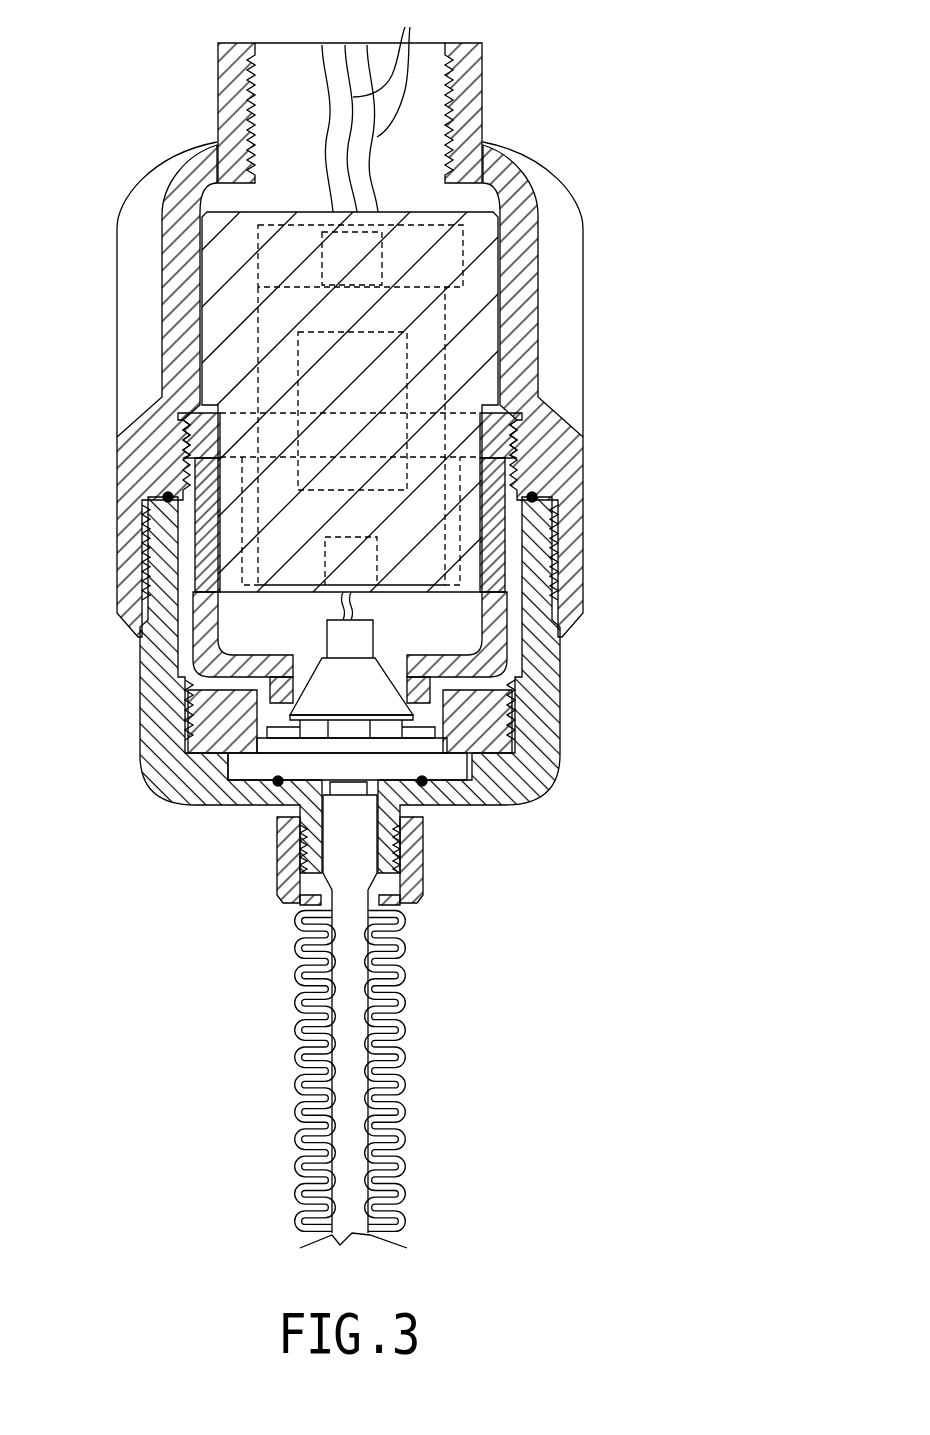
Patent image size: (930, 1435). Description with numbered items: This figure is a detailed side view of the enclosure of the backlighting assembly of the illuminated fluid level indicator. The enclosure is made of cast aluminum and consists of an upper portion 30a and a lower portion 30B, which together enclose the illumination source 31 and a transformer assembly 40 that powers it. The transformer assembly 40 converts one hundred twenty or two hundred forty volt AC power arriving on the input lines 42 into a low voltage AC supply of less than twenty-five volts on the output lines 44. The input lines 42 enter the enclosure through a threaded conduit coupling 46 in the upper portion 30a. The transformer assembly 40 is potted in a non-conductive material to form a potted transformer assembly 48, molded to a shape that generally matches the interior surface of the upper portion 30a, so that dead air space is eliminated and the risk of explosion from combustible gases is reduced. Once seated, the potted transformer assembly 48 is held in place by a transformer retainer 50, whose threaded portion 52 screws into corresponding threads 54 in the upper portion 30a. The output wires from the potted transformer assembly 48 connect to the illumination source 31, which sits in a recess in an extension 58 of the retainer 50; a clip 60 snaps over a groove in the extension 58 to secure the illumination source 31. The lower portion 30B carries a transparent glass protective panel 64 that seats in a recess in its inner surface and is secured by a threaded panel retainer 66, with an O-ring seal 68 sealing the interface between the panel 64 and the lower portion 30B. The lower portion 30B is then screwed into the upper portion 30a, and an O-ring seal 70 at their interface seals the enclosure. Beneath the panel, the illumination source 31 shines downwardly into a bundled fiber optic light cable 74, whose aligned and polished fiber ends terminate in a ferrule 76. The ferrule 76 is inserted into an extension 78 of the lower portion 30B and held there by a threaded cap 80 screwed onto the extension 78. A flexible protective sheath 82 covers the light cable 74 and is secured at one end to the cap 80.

The input lines 42 is at (372, 80).
The threaded conduit coupling 46 is at (473, 67).
The upper portion 30a is at (538, 168).
The potted transformer assembly 48 is at (485, 228).
The transformer assembly 40 is at (448, 350).
The threaded portion 52 is at (515, 452).
The threads 54 is at (501, 435).
The O-ring seal 70 is at (168, 490).
The transformer retainer 50 is at (497, 527).
The output lines 44 is at (352, 598).
The illumination source 31 is at (347, 690).
The extension 58 is at (430, 688).
The clip 60 is at (280, 720).
The threaded panel retainer 66 is at (490, 733).
The transparent protective panel 64 is at (247, 765).
The O-ring seal 68 is at (422, 781).
The lower portion 30B is at (545, 785).
The extension 78 is at (282, 865).
The threaded cap 80 is at (420, 893).
The ferrule 76 is at (350, 833).
The bundled fiber optic light cable 74 is at (348, 1093).
The flexible protective sheath 82 is at (403, 1185).